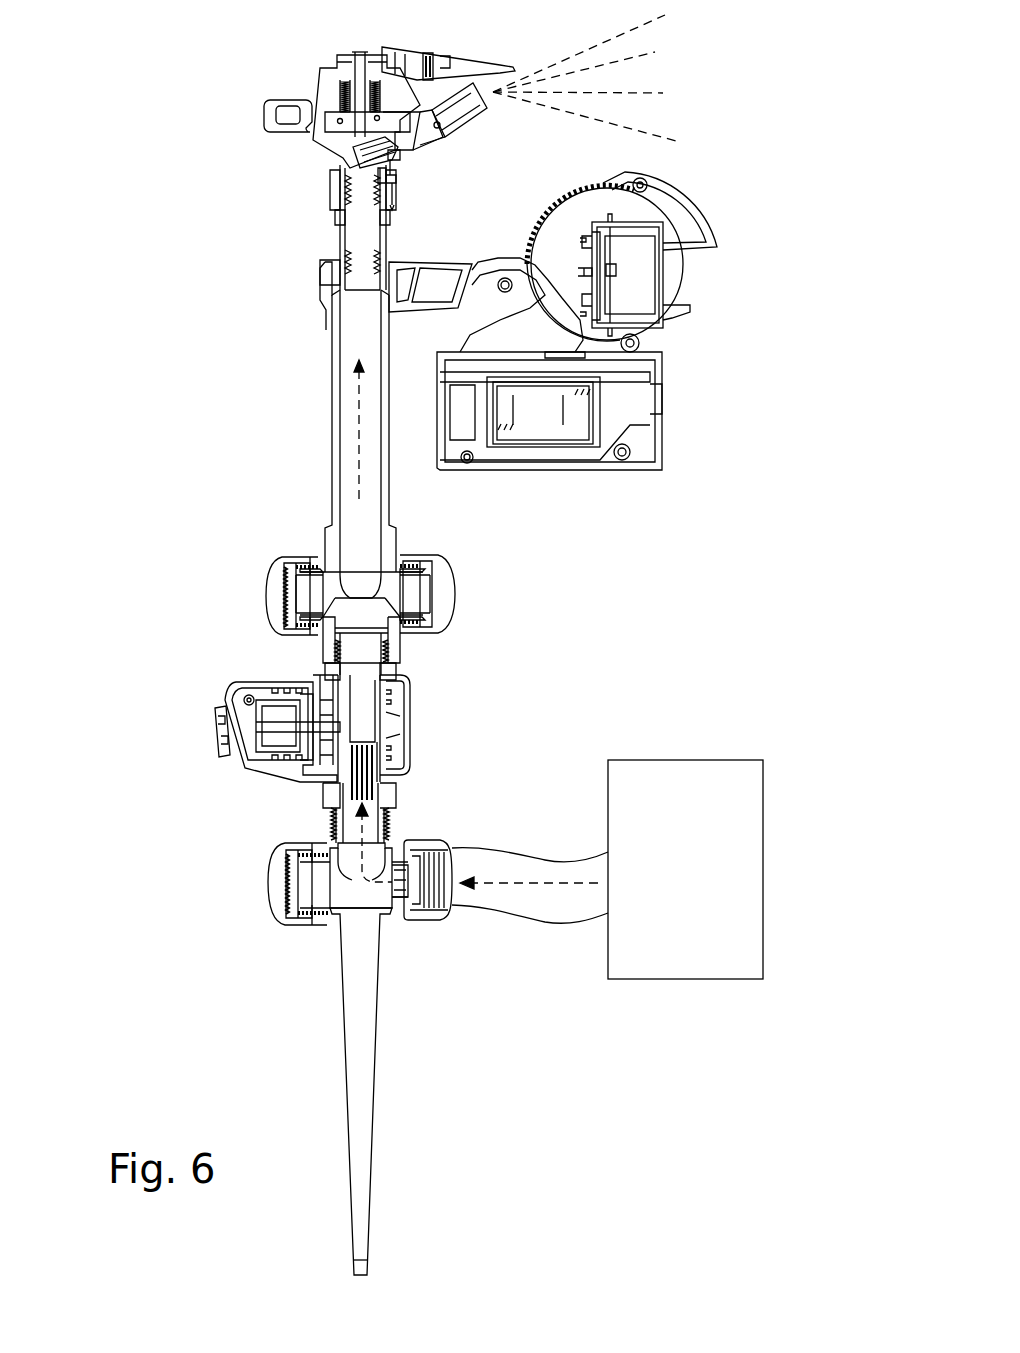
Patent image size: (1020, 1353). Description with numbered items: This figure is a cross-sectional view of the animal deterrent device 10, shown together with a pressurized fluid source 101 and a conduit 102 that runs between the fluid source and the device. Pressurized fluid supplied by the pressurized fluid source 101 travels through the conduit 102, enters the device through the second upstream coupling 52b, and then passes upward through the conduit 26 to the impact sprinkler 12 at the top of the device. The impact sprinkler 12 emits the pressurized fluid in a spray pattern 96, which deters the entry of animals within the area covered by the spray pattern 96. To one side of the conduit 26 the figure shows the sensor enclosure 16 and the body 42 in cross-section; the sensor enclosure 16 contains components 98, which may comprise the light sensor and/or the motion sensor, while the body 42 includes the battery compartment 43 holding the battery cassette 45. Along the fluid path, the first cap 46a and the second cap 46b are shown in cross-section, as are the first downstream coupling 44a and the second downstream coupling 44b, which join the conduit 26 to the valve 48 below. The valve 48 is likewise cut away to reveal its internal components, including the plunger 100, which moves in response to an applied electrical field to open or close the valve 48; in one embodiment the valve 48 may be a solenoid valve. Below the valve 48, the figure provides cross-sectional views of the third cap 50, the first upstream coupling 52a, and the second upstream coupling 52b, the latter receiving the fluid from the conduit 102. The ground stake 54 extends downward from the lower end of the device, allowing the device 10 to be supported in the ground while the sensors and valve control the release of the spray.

The animal deterrent device 10 is at (208, 236).
The impact sprinkler 12 is at (325, 91).
The sensor enclosure 16 is at (540, 238).
The conduit 26 is at (343, 451).
The body 42 is at (563, 457).
The battery compartment 43 is at (630, 458).
The first downstream coupling 44a is at (294, 600).
The second downstream coupling 44b is at (420, 595).
The battery cassette 45 is at (575, 411).
The first cap 46a is at (270, 580).
The second cap 46b is at (450, 598).
The valve 48 is at (222, 745).
The third cap 50 is at (283, 853).
The first upstream coupling 52a is at (302, 878).
The second upstream coupling 52b is at (430, 850).
The ground stake 54 is at (358, 1058).
The spray pattern 96 is at (575, 38).
The components 98 is at (646, 268).
The plunger 100 is at (307, 722).
The pressurized fluid source 101 is at (685, 869).
The conduit 102 is at (512, 915).